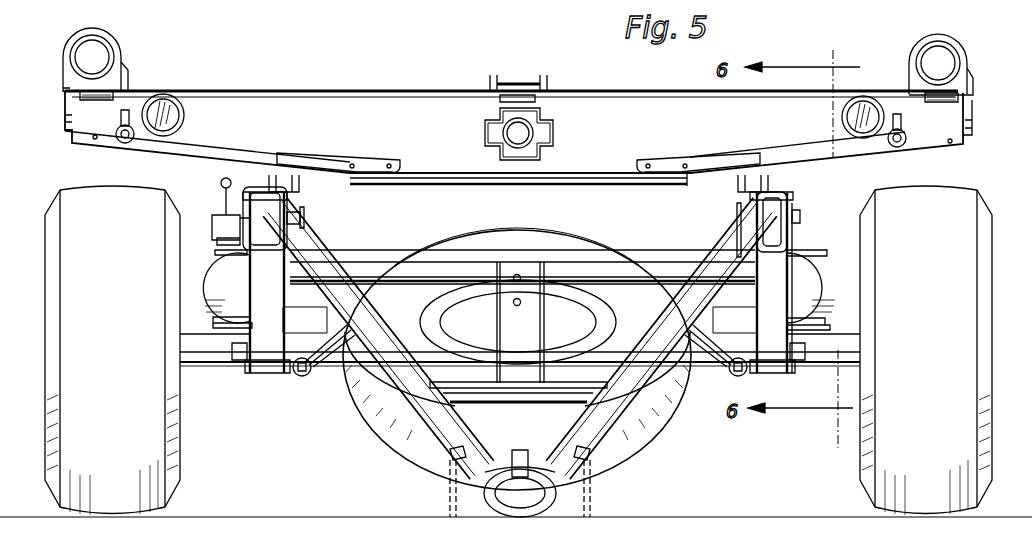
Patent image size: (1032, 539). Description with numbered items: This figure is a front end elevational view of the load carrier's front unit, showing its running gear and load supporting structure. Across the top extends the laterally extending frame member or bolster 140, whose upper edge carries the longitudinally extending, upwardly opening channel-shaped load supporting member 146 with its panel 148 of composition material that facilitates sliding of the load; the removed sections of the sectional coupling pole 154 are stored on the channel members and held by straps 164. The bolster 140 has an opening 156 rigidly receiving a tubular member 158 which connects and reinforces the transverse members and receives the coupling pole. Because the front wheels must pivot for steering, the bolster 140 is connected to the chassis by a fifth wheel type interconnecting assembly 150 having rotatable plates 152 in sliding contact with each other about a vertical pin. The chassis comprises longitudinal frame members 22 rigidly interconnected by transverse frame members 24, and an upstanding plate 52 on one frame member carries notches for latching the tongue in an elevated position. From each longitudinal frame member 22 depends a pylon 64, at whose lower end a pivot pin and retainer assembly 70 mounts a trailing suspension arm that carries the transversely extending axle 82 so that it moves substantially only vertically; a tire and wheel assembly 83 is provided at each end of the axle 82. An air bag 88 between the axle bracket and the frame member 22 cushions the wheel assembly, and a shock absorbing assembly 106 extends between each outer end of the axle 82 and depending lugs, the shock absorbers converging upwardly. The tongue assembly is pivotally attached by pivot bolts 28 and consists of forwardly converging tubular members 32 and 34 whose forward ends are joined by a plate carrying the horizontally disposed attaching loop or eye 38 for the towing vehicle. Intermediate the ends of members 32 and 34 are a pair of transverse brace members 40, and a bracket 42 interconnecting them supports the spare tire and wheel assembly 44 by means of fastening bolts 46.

The transverse frame member 140 is at (355, 106).
The channel-shaped load supporting member 146 is at (68, 88).
The panel 148 is at (518, 82).
The fifth wheel interconnecting assembly 150 is at (600, 171).
The rotatable plate 152 is at (440, 173).
The coupling pole 154 is at (115, 53).
The opening 156 is at (550, 137).
The tubular member 158 is at (532, 117).
The strap 164 is at (128, 68).
The upstanding plate 52 is at (745, 170).
The longitudinal frame member 22 is at (780, 188).
The transverse frame member 24 is at (340, 222).
The pivot bolt 28 is at (300, 218).
The transverse brace member 40 is at (673, 268).
The bracket 42 is at (527, 342).
The fastening bolt 46 is at (514, 302).
The air bag 88 is at (812, 290).
The axle 82 is at (190, 352).
The pivot pin and retainer assembly 70 is at (246, 366).
The shock absorbing assembly 106 is at (322, 368).
The depending pylon 64 is at (778, 343).
The spare tire and wheel assembly 44 is at (395, 422).
The tongue forming member 32 is at (450, 428).
The tongue forming member 34 is at (593, 430).
The attaching loop or eye 38 is at (553, 510).
The tire and wheel assembly 83 is at (140, 478).